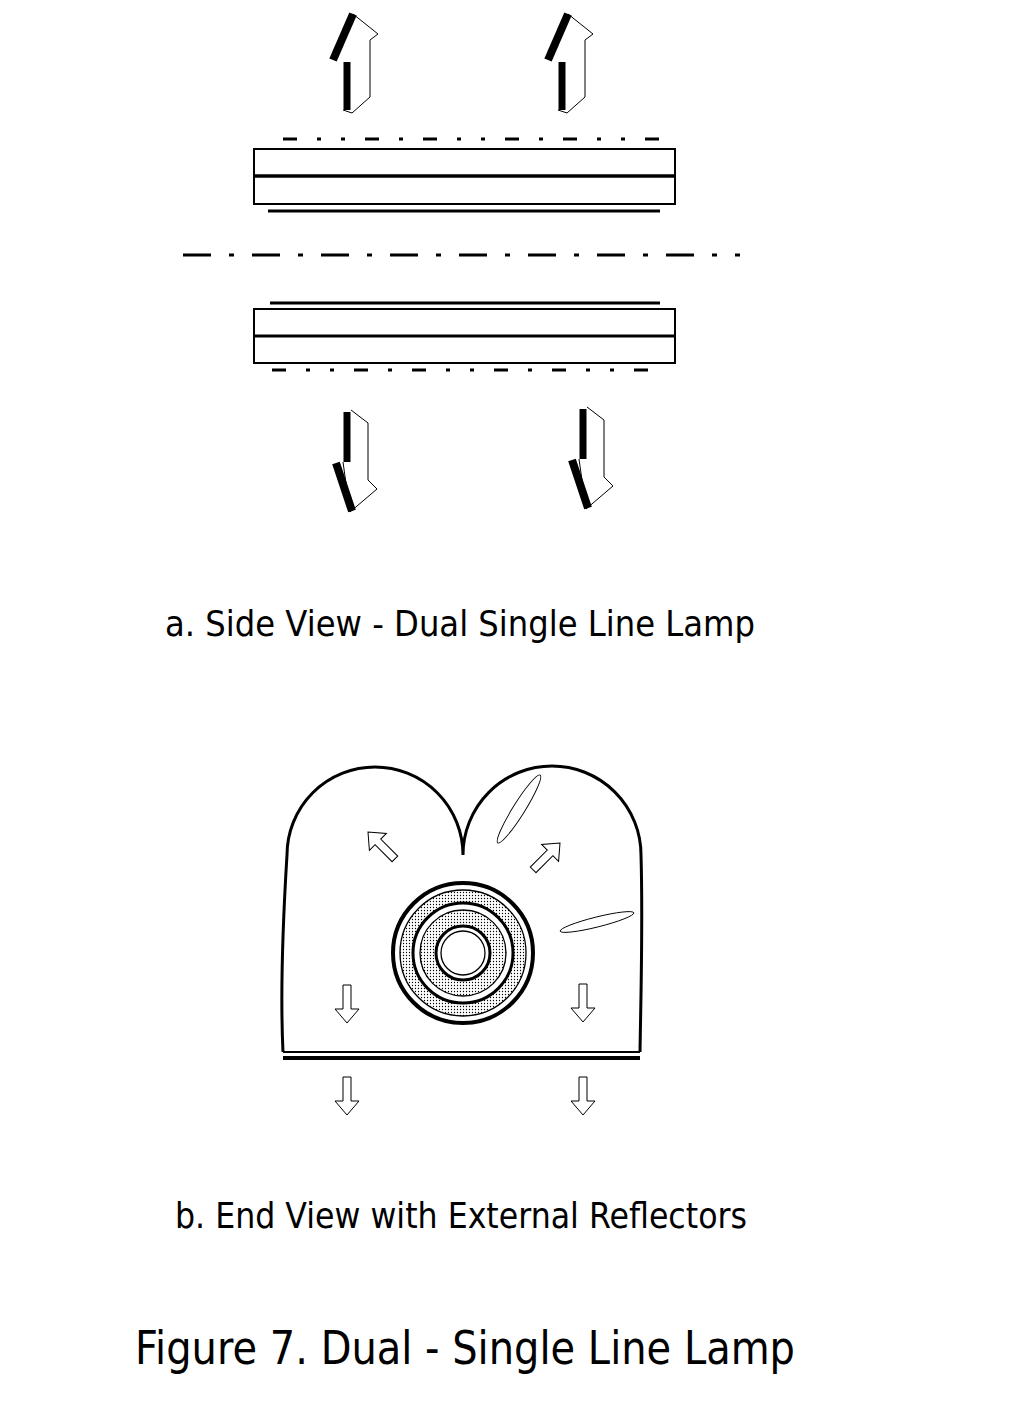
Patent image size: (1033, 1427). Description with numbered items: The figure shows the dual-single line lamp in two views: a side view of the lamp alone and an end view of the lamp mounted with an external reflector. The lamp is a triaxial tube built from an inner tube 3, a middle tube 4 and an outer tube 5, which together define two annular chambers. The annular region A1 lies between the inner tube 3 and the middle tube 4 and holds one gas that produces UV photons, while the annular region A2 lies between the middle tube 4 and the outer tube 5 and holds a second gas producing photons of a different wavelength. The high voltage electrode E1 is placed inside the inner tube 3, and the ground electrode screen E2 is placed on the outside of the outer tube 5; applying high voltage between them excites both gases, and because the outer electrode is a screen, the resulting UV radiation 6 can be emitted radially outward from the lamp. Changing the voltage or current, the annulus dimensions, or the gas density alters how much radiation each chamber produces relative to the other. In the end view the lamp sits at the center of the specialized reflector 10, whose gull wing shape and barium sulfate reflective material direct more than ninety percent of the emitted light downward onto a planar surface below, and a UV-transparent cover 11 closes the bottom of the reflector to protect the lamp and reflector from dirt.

The inner tube 3 is at (242, 212).
The middle tube 4 is at (232, 174).
The outer tube 5 is at (242, 374).
The radially outward UV radiation 6 is at (473, 273).
The specialized reflector 10 is at (275, 838).
The cover 11 is at (300, 1068).
The annular region A1 is at (688, 180).
The annular region A2 is at (682, 158).
The high voltage electrode E1 is at (343, 292).
The ground electrode screen E2 is at (650, 382).